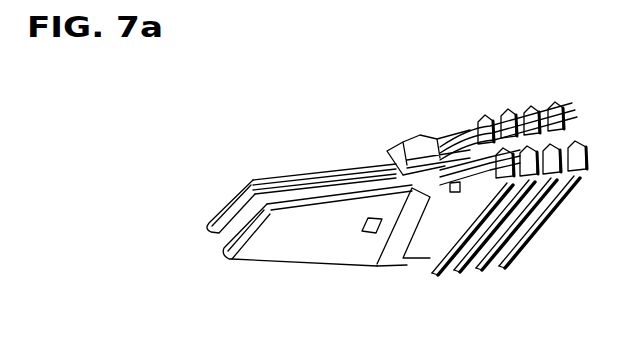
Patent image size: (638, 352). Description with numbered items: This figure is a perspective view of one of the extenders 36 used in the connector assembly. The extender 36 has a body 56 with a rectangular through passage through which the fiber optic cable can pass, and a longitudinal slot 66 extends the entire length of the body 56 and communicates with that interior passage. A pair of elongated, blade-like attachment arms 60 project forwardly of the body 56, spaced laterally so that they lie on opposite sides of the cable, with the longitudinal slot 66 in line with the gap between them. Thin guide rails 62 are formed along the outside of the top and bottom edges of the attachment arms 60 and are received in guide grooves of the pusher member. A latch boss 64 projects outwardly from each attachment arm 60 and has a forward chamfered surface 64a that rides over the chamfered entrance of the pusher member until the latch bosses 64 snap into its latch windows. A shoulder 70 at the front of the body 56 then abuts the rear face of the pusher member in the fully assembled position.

The extender 36 is at (445, 112).
The body 56 is at (432, 265).
The attachment arms 60 is at (300, 253).
The guide rails 62 is at (309, 172).
The latch boss 64 is at (377, 238).
The forward chamfered surface 64a is at (362, 231).
The longitudinal slot 66 is at (481, 116).
The shoulder 70 is at (391, 150).